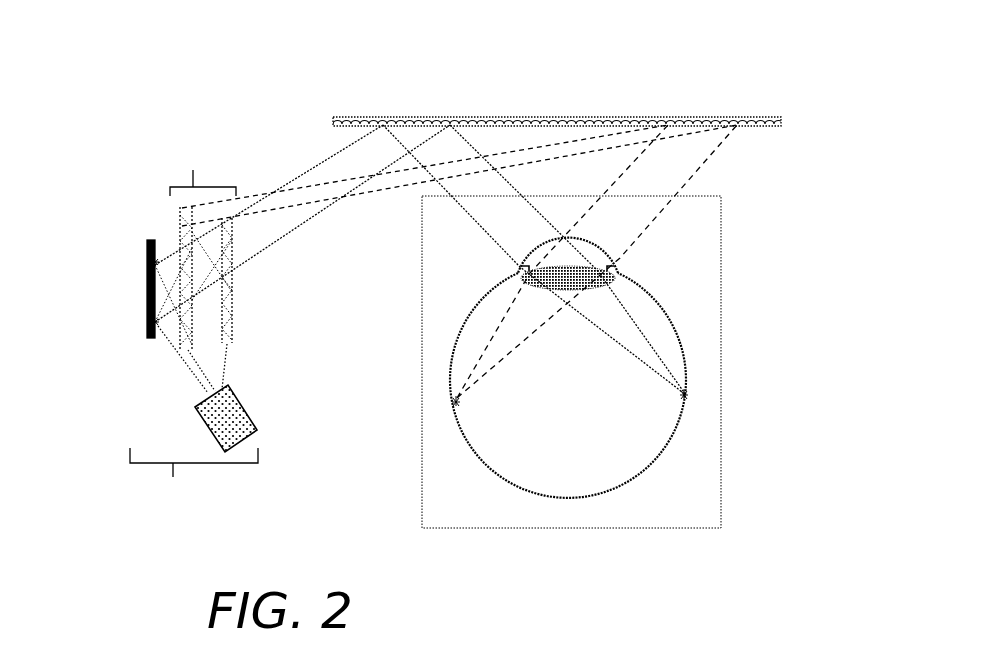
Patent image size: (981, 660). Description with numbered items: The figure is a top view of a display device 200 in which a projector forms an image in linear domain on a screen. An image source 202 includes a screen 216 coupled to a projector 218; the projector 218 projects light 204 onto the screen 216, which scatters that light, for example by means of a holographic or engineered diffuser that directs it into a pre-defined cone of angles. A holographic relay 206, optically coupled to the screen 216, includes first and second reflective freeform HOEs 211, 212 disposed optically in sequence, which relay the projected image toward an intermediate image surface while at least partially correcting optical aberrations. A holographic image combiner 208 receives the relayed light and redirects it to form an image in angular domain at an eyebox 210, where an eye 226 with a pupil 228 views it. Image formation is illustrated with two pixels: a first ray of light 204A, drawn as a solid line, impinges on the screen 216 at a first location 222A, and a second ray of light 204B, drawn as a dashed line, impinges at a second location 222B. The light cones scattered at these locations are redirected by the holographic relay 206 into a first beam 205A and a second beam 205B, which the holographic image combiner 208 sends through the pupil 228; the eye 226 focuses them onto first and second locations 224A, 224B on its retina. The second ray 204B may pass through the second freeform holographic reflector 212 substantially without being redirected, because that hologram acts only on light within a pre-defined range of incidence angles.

The display device 200 is at (285, 112).
The image source 202 is at (194, 477).
The light 204 is at (160, 392).
The first ray of light 204A is at (178, 359).
The second ray of light 204B is at (198, 366).
The first beam 205A is at (270, 240).
The second beam 205B is at (696, 167).
The holographic relay 206 is at (203, 167).
The holographic image combiner 208 is at (542, 116).
The eyebox 210 is at (705, 517).
The first reflective freeform HOE 211 is at (232, 297).
The second reflective freeform HOE 212 is at (181, 211).
The screen 216 is at (147, 292).
The projector 218 is at (257, 420).
The first location 222A is at (151, 323).
The second location 222B is at (151, 263).
The first location on the retina 224A is at (690, 398).
The second location on the retina 224B is at (452, 402).
The eye 226 is at (684, 338).
The pupil 228 is at (632, 271).